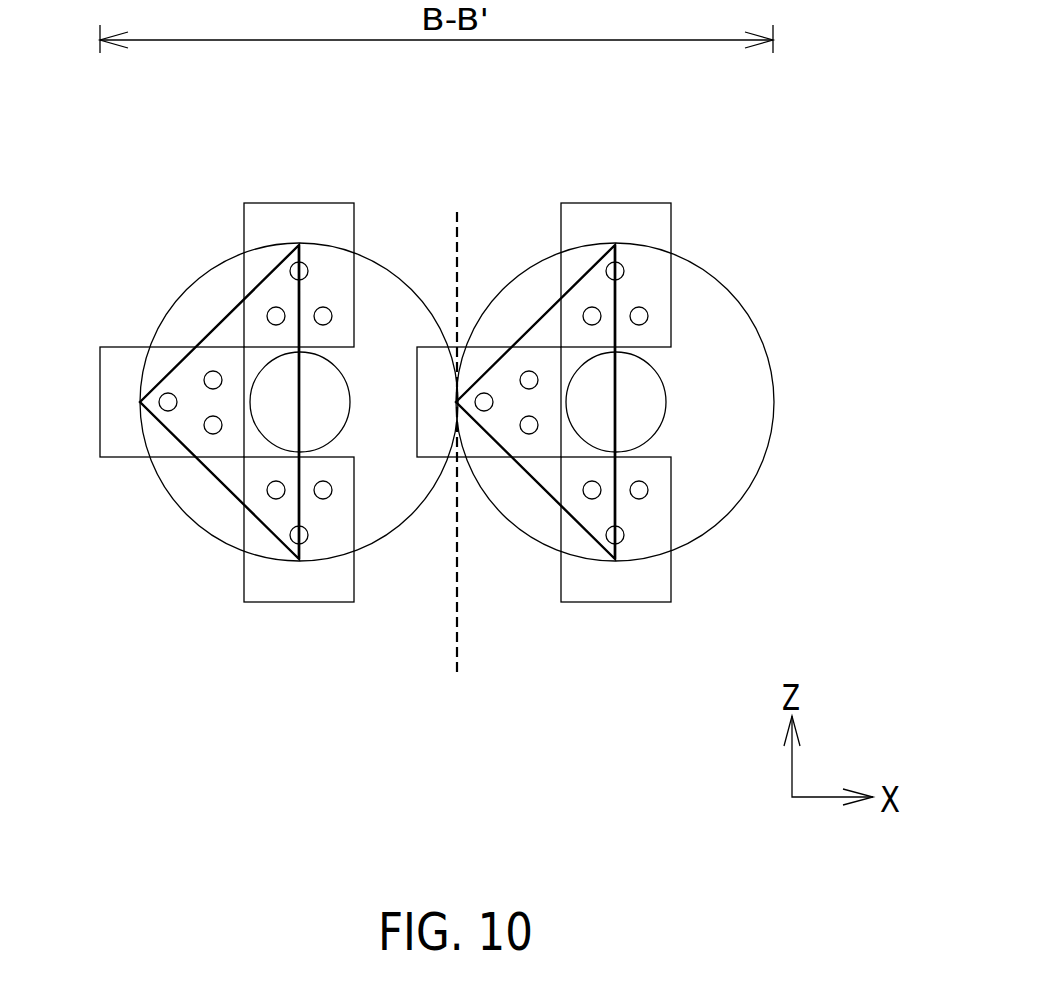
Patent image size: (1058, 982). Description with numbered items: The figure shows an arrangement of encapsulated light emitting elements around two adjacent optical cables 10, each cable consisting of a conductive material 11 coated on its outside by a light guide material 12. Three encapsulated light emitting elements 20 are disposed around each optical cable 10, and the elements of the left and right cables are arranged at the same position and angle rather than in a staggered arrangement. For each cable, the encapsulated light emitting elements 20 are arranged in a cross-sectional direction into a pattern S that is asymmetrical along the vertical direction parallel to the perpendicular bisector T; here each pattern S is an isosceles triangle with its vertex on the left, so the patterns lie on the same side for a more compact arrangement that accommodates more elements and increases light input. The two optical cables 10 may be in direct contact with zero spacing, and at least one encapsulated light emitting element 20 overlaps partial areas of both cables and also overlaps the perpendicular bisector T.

The optical cable 10 is at (353, 163).
The conductive material 11 is at (341, 420).
The light guide material 12 is at (398, 420).
The encapsulated light emitting element 20 is at (297, 228).
The pattern S is at (219, 323).
The perpendicular bisector T is at (457, 422).